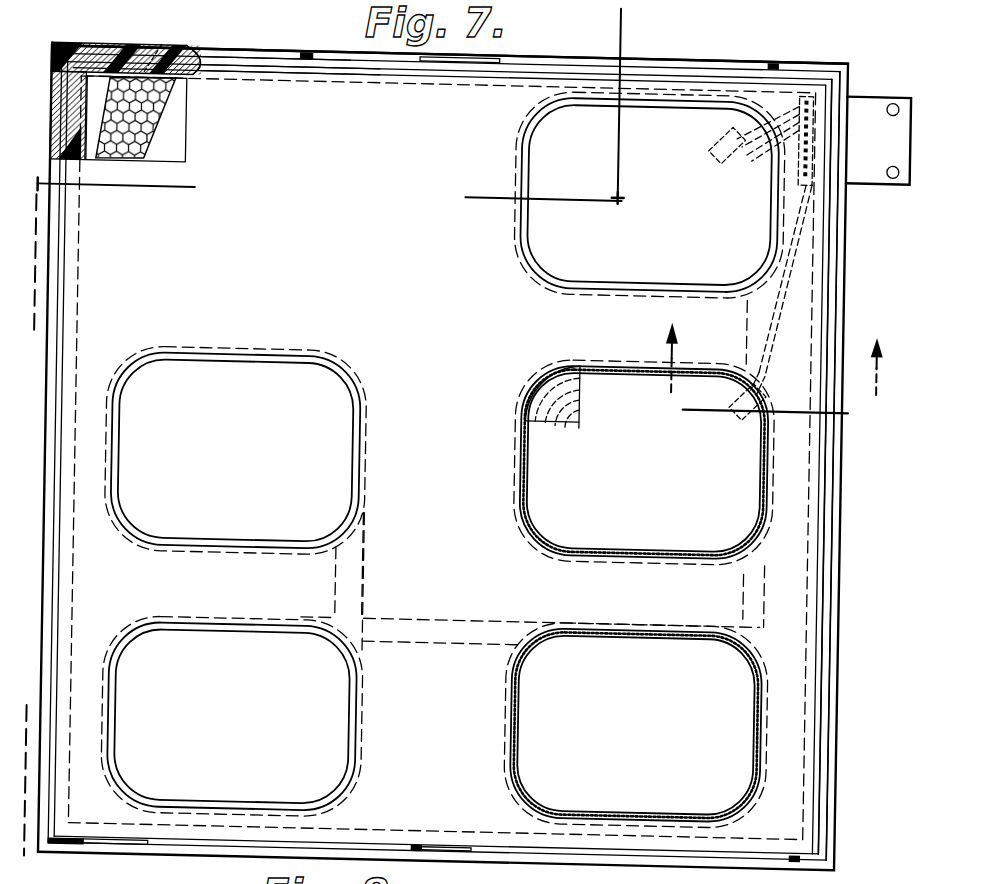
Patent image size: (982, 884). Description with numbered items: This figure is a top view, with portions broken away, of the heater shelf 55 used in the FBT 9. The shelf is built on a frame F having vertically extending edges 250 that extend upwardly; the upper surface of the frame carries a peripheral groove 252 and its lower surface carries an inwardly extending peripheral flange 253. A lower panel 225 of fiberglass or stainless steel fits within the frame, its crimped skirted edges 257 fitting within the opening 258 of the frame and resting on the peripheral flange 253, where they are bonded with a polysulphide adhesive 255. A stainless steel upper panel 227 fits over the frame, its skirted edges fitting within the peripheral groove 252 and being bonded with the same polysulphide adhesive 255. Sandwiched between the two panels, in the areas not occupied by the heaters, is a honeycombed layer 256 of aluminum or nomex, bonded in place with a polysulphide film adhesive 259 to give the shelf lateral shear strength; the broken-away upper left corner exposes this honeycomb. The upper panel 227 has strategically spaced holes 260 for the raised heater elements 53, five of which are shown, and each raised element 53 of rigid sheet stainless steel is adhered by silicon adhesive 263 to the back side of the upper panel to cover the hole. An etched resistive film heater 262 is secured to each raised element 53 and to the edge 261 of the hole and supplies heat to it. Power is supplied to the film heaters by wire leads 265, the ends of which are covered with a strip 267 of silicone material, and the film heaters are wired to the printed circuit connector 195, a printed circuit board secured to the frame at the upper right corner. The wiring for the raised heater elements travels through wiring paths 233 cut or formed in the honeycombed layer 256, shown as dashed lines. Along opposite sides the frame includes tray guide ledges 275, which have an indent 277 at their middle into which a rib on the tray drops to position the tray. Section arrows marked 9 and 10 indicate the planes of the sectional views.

The FBT 9 is at (359, 442).
The section line 10- 10 is at (640, 351).
The raised heater elements 53 is at (620, 137).
The heater shelf 55 is at (712, 0).
The printed circuit connector 195 is at (879, 113).
The lower panel 225 is at (45, 72).
The upper panel 227 is at (418, 732).
The wiring paths 233 is at (330, 538).
The vertically extending edges 250 is at (803, 483).
The peripheral groove 252 is at (851, 466).
The peripheral flange 253 is at (172, 37).
The polysulphide adhesive 255 is at (859, 467).
The honeycombed layer 256 is at (220, 44).
The skirted edges 257 is at (20, 61).
The opening 258 is at (97, 10).
The polysulphide film adhesive 259 is at (211, 0).
The spaced holes 260 is at (500, 327).
The edge 261 is at (527, 395).
The etched resistive film heater 262 is at (514, 309).
The silicon adhesive 263 is at (604, 564).
The wire leads 265 is at (738, 37).
The strip 267 is at (734, 296).
The tray guide ledges 275 is at (264, 0).
The indent 277 is at (449, 3).